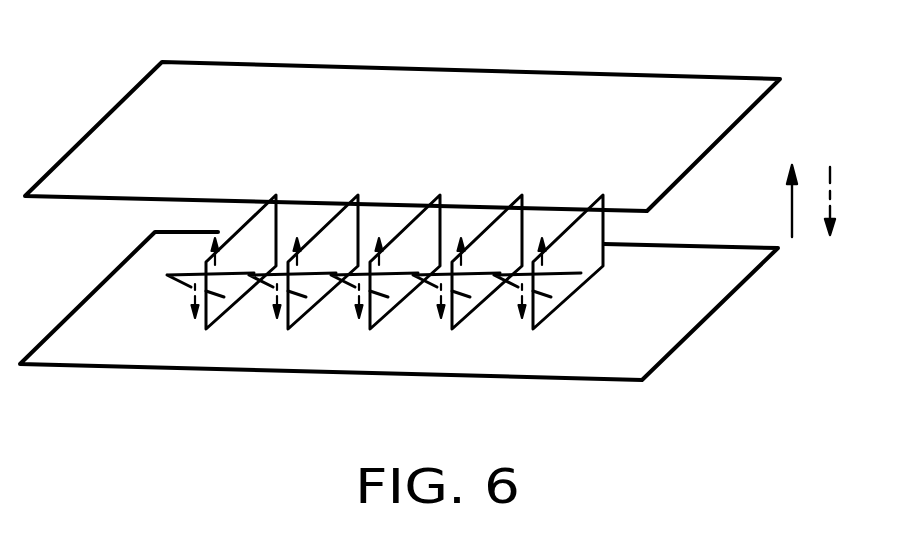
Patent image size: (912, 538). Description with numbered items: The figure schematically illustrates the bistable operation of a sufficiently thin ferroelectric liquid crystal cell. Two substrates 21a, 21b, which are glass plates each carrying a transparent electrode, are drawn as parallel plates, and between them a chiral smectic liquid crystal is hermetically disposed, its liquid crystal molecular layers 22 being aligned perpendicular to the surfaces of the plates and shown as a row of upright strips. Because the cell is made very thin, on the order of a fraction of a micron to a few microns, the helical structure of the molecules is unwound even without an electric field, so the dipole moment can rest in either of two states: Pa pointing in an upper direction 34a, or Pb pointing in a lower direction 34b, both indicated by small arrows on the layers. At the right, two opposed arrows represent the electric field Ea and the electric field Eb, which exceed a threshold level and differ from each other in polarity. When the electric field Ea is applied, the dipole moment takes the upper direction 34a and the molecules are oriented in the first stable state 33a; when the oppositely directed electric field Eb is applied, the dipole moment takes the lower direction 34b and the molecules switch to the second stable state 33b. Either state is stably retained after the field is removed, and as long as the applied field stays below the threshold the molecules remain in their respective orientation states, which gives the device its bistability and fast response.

The substrate 21a is at (697, 88).
The substrate 21b is at (730, 273).
The liquid crystal molecular layers 22 is at (604, 232).
The first stable state 33a is at (236, 262).
The second stable state 33b is at (210, 292).
The upper direction 34a is at (214, 240).
The lower direction 34b is at (193, 284).
The electric field Ea is at (804, 201).
The electric field Eb is at (842, 201).